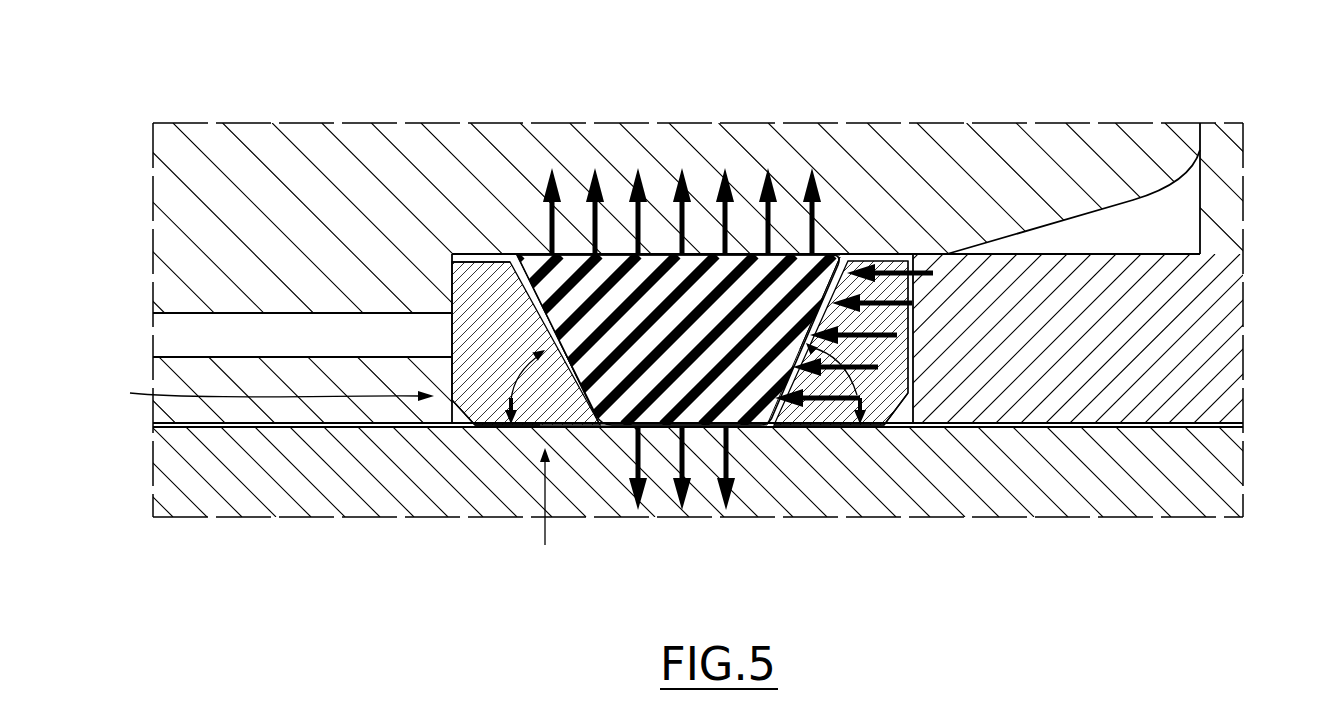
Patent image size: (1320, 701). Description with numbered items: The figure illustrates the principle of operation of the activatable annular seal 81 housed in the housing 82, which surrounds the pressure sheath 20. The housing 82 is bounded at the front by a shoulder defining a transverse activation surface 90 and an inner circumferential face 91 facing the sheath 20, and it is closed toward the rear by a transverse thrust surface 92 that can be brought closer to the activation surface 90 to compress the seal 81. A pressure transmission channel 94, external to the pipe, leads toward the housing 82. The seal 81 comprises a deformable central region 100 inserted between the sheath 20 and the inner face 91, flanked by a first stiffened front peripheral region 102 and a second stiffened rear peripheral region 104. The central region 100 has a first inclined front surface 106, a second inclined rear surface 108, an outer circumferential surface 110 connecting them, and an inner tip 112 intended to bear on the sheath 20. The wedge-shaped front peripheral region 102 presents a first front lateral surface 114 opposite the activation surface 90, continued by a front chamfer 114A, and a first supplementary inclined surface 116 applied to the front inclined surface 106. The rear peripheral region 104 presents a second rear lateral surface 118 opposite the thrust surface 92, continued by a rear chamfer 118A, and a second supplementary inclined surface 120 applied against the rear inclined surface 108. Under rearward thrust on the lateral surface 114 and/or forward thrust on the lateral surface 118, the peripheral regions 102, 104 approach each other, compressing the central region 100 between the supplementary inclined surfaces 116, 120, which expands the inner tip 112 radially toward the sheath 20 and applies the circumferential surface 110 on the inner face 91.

The pressure sheath 20 is at (1223, 482).
The annular seal 81 is at (544, 512).
The housing 82 is at (264, 393).
The transverse activation surface 90 is at (528, 300).
The inner circumferential face 91 is at (886, 262).
The transverse thrust surface 92 is at (887, 398).
The pressure transmission channel 94 is at (240, 312).
The deformable central region 100 is at (670, 315).
The first stiffened front peripheral region 102 is at (476, 403).
The second stiffened rear peripheral region 104 is at (837, 412).
The first inclined front surface 106 is at (518, 255).
The second inclined rear surface 108 is at (830, 290).
The outer circumferential surface 110 is at (745, 253).
The inner tip 112 is at (667, 362).
The first front lateral surface 114 is at (522, 323).
The front chamfer 114A is at (465, 405).
The first supplementary inclined surface 116 is at (578, 375).
The second rear lateral surface 118 is at (947, 422).
The rear chamfer 118A is at (900, 407).
The second supplementary inclined surface 120 is at (788, 385).